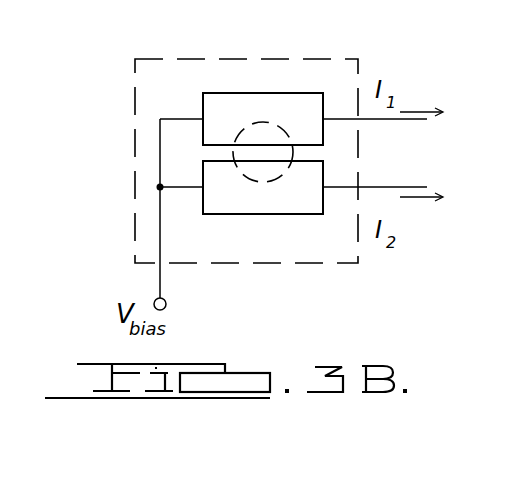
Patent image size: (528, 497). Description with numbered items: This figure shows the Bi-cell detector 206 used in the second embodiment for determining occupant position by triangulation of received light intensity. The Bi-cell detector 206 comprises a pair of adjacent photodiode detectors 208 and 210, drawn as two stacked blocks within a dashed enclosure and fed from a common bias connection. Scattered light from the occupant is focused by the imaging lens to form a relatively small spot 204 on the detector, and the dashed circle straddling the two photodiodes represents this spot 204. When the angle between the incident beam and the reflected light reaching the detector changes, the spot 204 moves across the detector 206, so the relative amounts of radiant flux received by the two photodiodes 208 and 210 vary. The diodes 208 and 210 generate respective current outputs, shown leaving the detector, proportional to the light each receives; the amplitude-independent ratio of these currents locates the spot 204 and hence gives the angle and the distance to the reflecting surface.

The spot 204 is at (268, 186).
The Bi-cell detector 206 is at (134, 151).
The photodiode detector 208 is at (247, 93).
The photodiode detector 210 is at (227, 215).